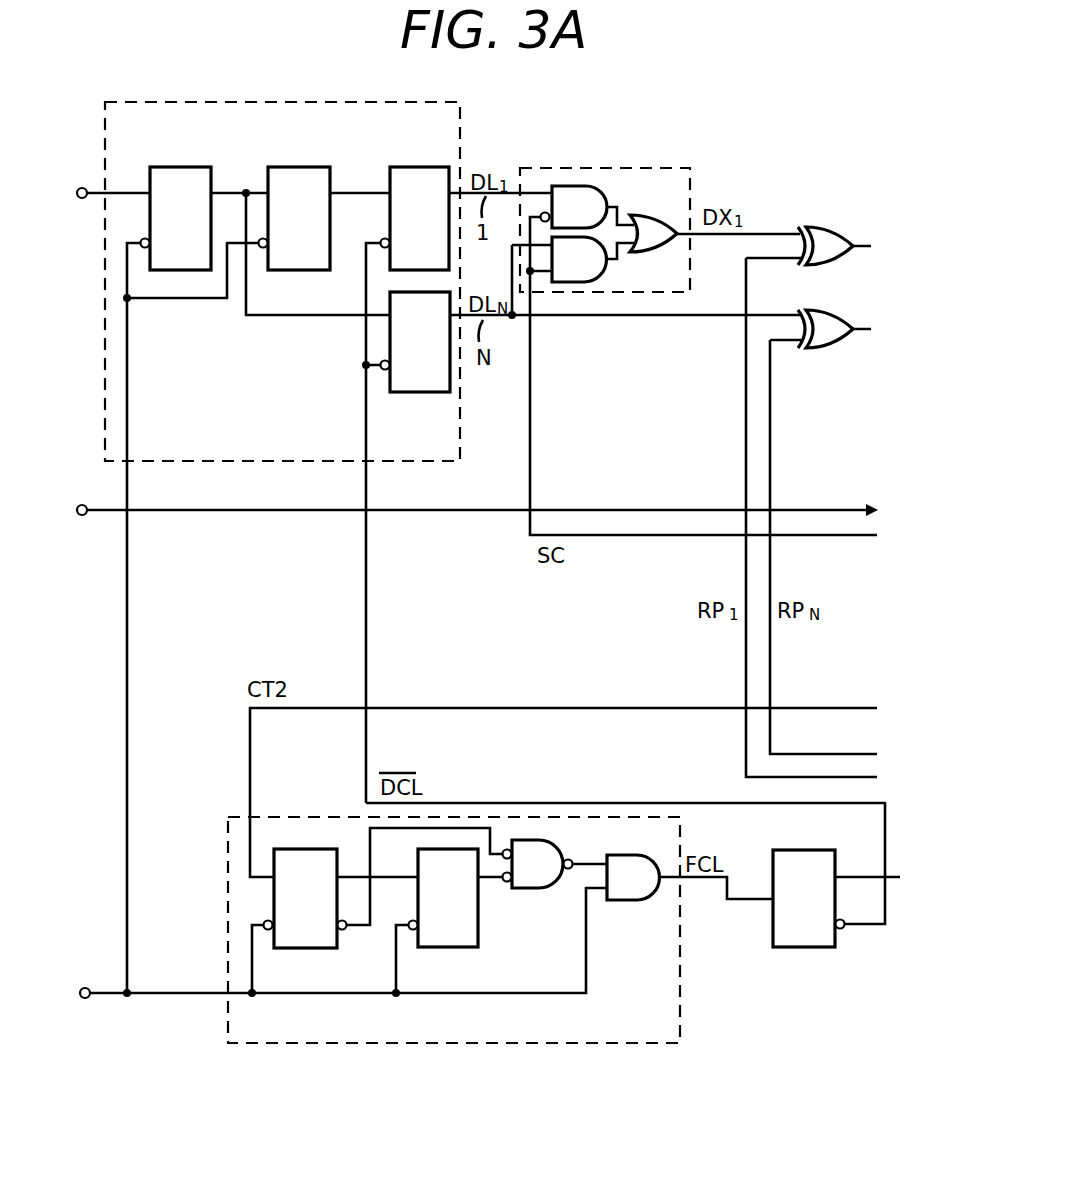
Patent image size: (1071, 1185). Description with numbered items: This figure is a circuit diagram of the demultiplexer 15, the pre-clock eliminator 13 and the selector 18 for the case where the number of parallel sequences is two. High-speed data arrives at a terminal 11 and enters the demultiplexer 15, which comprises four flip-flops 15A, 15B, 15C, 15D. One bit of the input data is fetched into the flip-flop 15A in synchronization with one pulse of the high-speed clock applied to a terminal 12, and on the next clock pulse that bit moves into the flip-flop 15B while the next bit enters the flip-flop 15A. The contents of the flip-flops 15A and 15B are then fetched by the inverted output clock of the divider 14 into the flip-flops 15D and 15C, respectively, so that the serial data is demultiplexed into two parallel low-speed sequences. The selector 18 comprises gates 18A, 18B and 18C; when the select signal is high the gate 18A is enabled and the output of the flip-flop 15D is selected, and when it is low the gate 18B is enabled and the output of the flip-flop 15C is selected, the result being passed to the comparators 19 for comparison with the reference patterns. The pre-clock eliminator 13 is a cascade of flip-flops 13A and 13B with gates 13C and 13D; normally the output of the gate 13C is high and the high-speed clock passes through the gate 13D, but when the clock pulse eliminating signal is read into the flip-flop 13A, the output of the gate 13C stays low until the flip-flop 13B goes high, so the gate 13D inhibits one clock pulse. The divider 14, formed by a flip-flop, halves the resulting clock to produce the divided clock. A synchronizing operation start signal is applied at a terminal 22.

The terminal 11 is at (78, 200).
The terminal 12 is at (88, 1000).
The terminal 22 is at (82, 516).
The demultiplexer 15 is at (188, 100).
The flip-flop 15A is at (174, 166).
The flip-flop 15B is at (292, 166).
The flip-flop 15C is at (430, 166).
The flip-flop 15D is at (410, 393).
The selector 18 is at (655, 168).
The gate 18A is at (607, 276).
The gate 18B is at (587, 186).
The gate 18C is at (650, 215).
The comparator 19 is at (812, 375).
The pre-clock eliminator 13 is at (226, 842).
The flip-flop 13A is at (300, 948).
The flip-flop 13B is at (445, 948).
The gate 13C is at (532, 889).
The gate 13D is at (628, 901).
The divider 14 is at (790, 948).